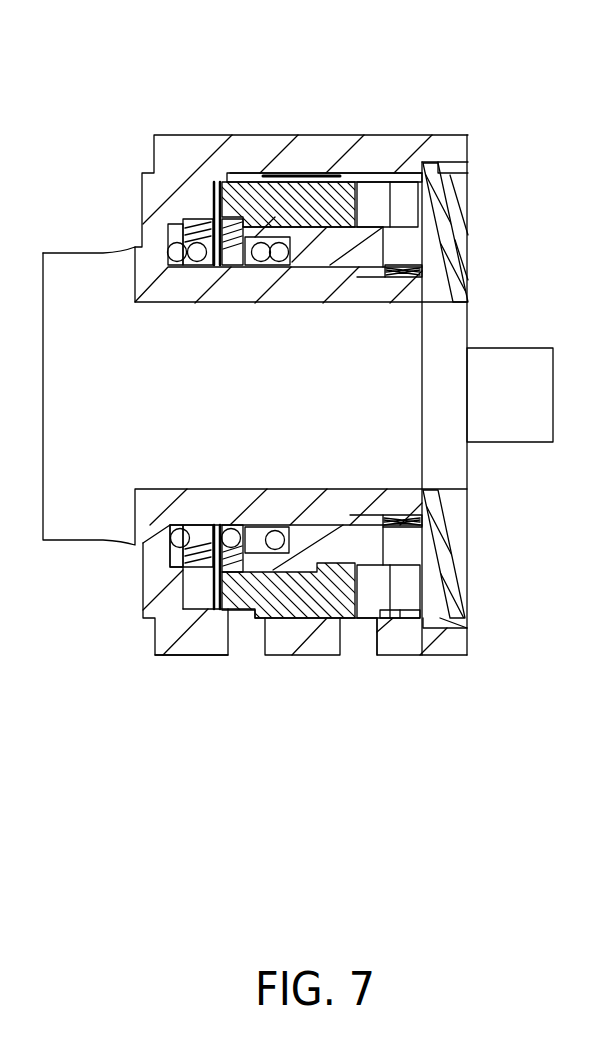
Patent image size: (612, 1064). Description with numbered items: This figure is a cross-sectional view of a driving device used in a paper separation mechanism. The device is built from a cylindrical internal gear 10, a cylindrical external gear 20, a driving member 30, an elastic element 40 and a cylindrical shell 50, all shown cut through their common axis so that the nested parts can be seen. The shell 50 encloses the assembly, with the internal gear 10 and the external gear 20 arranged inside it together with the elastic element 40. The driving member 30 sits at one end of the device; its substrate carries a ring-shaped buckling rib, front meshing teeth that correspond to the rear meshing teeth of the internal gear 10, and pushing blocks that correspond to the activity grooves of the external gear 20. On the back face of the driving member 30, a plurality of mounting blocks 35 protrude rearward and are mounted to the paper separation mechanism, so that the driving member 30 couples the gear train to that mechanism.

The internal gear 10 is at (290, 573).
The external gear 20 is at (242, 175).
The driving member 30 is at (460, 226).
The mounting blocks 35 is at (508, 426).
The elastic element 40 is at (181, 546).
The shell 50 is at (322, 150).